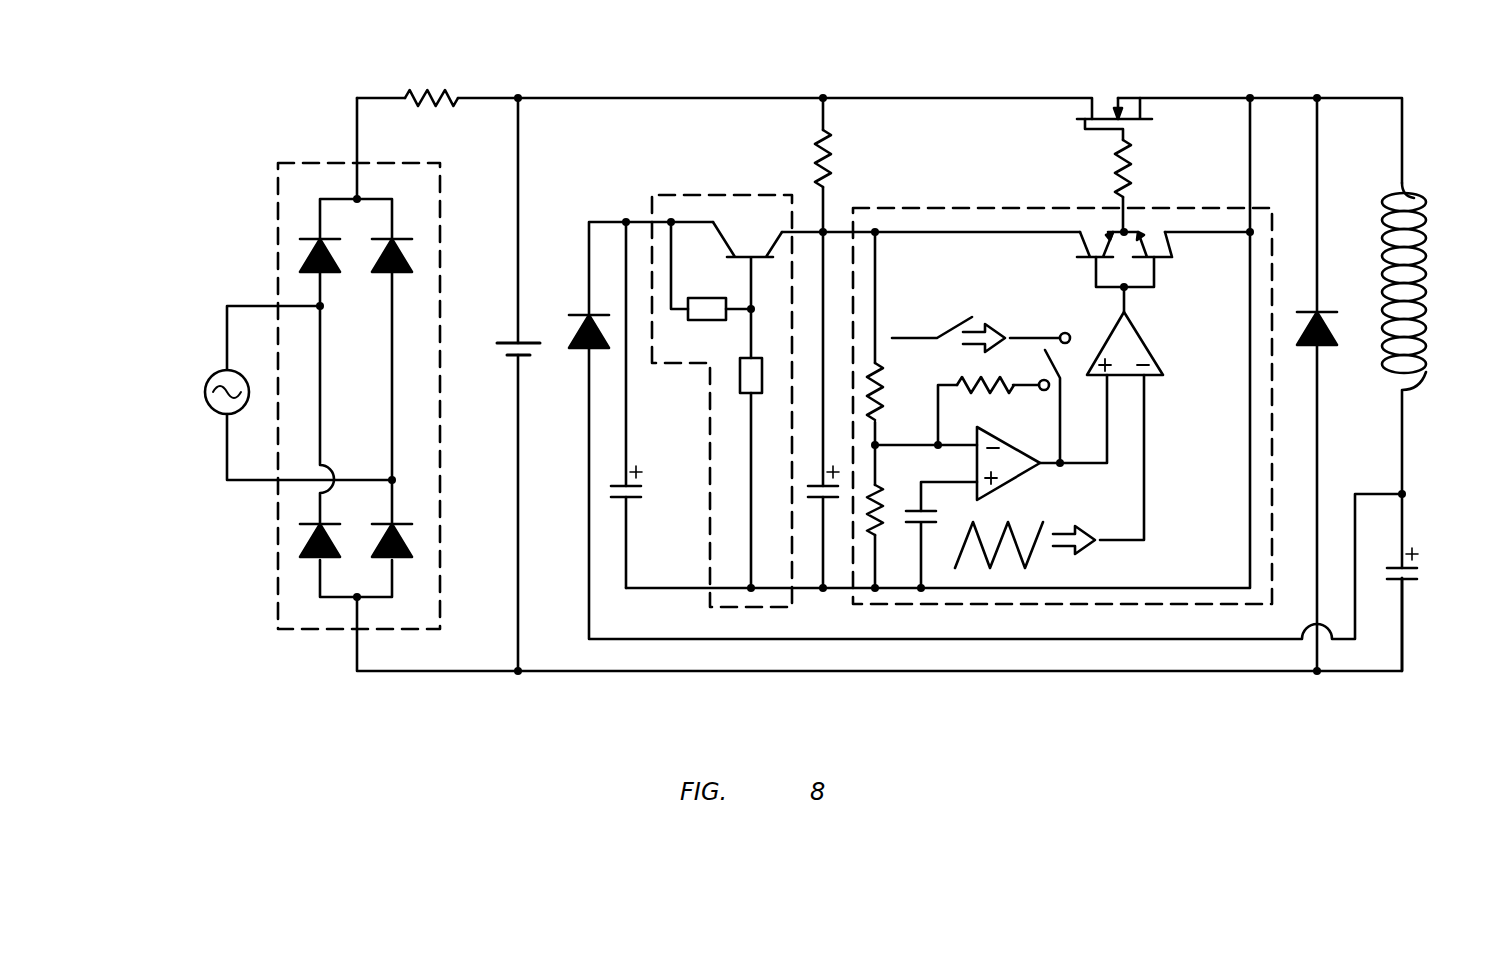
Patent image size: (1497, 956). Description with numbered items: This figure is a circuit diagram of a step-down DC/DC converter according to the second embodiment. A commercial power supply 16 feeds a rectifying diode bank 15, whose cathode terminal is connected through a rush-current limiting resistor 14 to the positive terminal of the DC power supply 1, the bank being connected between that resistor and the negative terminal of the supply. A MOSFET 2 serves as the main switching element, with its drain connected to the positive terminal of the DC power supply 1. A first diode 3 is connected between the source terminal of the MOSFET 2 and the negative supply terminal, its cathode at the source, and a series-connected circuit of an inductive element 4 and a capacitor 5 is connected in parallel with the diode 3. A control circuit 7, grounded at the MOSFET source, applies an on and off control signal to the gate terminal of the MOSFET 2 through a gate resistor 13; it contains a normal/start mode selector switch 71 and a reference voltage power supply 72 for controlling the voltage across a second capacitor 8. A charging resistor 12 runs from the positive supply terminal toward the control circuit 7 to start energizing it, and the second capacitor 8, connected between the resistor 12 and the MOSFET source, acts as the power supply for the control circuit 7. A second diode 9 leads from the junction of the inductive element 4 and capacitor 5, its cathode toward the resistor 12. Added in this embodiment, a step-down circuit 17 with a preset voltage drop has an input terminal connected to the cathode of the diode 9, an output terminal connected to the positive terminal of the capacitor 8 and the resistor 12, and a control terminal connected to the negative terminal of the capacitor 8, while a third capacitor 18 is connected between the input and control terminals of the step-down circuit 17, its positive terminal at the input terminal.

The DC power supply 1 is at (505, 352).
The MOSFET 2 is at (1127, 97).
The first diode 3 is at (1325, 347).
The inductive element 4 is at (1427, 212).
The capacitor 5 is at (1410, 580).
The control circuit 7 is at (1062, 381).
The second capacitor 8 is at (820, 500).
The second diode 9 is at (582, 350).
The charging resistor 12 is at (815, 160).
The gate resistor 13 is at (1112, 172).
The rush-current limiting resistor 14 is at (447, 97).
The rectifying diode bank 15 is at (277, 585).
The commercial power supply 16 is at (215, 418).
The step-down circuit 17 is at (705, 192).
The third capacitor 18 is at (632, 500).
The normal/start mode selector switch 71 is at (1062, 366).
The reference voltage power supply 72 is at (903, 508).